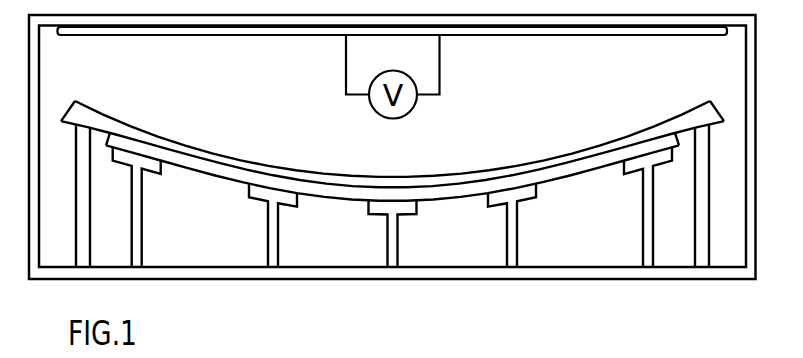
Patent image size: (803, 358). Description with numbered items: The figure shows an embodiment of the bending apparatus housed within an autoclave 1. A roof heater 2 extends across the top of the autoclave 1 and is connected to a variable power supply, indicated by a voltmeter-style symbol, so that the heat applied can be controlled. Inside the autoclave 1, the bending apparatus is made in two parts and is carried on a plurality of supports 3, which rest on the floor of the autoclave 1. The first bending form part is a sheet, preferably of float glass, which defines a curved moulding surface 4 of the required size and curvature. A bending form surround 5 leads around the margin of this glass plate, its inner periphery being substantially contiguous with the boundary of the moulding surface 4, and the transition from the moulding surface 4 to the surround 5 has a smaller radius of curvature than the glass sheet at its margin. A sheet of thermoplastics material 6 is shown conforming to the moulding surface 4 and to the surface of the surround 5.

The autoclave 1 is at (661, 280).
The roof heater 2 is at (178, 37).
The supports 3 is at (90, 195).
The moulding surface 4 is at (455, 188).
The bending form surround 5 is at (73, 122).
The sheet of thermoplastics material 6 is at (322, 174).